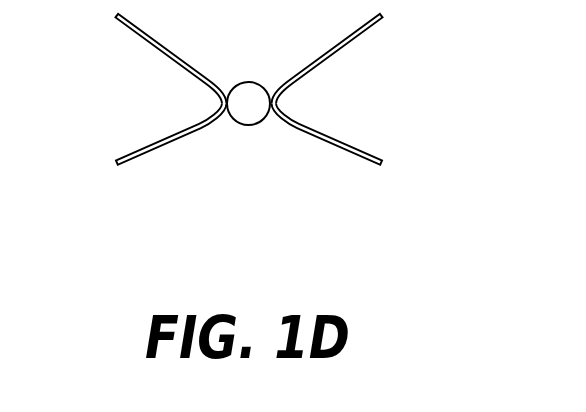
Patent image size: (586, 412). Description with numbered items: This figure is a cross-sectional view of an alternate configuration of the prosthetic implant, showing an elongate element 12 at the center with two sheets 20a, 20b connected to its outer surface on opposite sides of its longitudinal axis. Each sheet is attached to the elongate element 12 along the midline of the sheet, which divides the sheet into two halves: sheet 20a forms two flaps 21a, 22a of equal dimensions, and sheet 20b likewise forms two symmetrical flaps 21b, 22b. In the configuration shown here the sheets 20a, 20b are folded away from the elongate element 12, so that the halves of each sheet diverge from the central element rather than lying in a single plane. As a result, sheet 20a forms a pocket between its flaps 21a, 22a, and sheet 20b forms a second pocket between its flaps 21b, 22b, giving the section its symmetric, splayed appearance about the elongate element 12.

The elongate element 12 is at (250, 97).
The sheet 20a is at (351, 137).
The sheet 20b is at (143, 137).
The flap 21a is at (357, 33).
The flap 21b is at (128, 32).
The flap 22a is at (322, 147).
The flap 22b is at (160, 150).